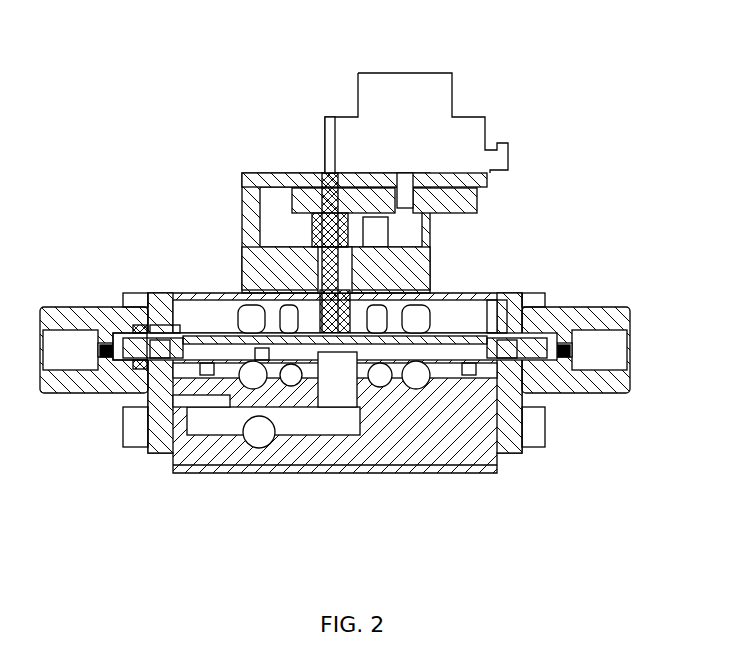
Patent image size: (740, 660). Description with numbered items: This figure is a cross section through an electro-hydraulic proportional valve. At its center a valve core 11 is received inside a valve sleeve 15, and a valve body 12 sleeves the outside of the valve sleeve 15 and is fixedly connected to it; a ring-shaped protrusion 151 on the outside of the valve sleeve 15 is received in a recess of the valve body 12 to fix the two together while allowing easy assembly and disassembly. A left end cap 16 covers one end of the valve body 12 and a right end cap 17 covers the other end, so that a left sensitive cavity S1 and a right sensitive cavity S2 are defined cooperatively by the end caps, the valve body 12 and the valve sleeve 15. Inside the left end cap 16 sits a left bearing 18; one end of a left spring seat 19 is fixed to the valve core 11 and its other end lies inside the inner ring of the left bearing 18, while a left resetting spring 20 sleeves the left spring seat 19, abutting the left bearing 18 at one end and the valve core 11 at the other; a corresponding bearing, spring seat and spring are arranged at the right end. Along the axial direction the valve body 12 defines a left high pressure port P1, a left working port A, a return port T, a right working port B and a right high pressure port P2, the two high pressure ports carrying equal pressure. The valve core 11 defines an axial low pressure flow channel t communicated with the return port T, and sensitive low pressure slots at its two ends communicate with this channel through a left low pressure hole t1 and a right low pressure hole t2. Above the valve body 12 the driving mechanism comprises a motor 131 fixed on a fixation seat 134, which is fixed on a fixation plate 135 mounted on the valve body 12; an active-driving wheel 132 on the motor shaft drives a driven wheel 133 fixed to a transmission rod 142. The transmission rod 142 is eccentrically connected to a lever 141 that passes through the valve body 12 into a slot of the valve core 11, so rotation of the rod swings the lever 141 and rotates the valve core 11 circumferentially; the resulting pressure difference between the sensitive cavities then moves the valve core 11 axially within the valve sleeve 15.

The valve core 11 is at (226, 300).
The valve body 12 is at (240, 230).
The valve sleeve 15 is at (203, 340).
The left end cap 16 is at (91, 320).
The right end cap 17 is at (583, 318).
The left bearing 18 is at (138, 340).
The left spring seat 19 is at (150, 330).
The left resetting spring 20 is at (170, 325).
The motor 131 is at (400, 195).
The active-driving wheel 132 is at (440, 210).
The driven wheel 133 is at (350, 193).
The fixation seat 134 is at (352, 180).
The fixation plate 135 is at (275, 268).
The lever 141 is at (322, 173).
The transmission rod 142 is at (333, 116).
The ring-shaped protrusion 151 is at (507, 300).
The left sensitive cavity S1 is at (160, 350).
The right sensitive cavity S2 is at (503, 355).
The left high pressure port P1 is at (252, 382).
The right high pressure port P2 is at (419, 382).
The left working port A is at (290, 378).
The right working port B is at (379, 378).
The return port T is at (337, 390).
The low pressure flow channel t is at (261, 355).
The left low pressure hole t1 is at (208, 370).
The right low pressure hole t2 is at (471, 370).